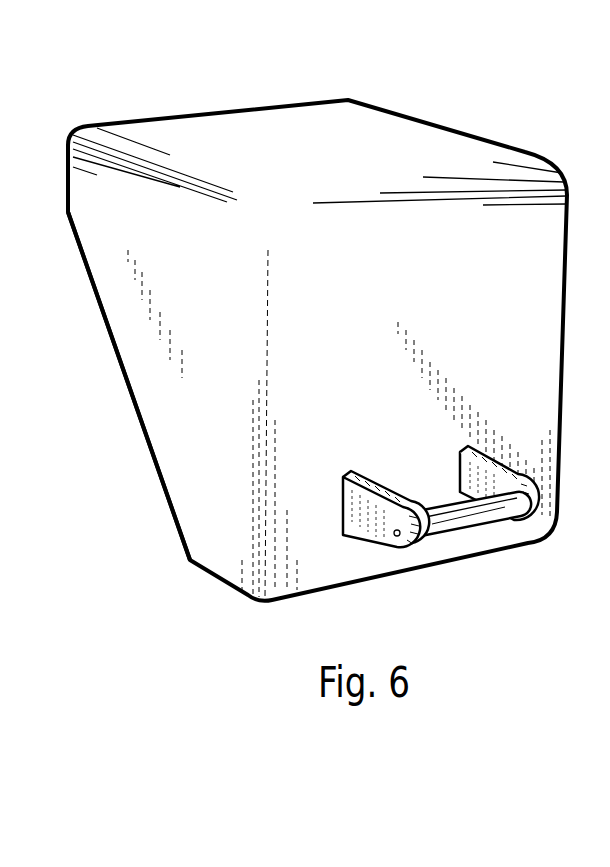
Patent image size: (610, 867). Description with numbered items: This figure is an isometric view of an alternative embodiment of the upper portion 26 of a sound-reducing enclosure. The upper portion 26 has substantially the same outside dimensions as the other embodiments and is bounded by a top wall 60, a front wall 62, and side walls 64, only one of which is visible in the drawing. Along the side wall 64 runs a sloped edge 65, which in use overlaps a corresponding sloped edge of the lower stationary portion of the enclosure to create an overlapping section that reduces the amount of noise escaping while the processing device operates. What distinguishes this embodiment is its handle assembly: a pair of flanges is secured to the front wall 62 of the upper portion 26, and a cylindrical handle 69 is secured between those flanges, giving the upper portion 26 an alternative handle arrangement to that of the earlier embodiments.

The upper portion 26 is at (438, 122).
The top wall 60 is at (338, 157).
The front wall 62 is at (468, 312).
The side wall 64 is at (216, 304).
The sloped edge 65 is at (133, 399).
The cylindrical handle 69 is at (447, 519).